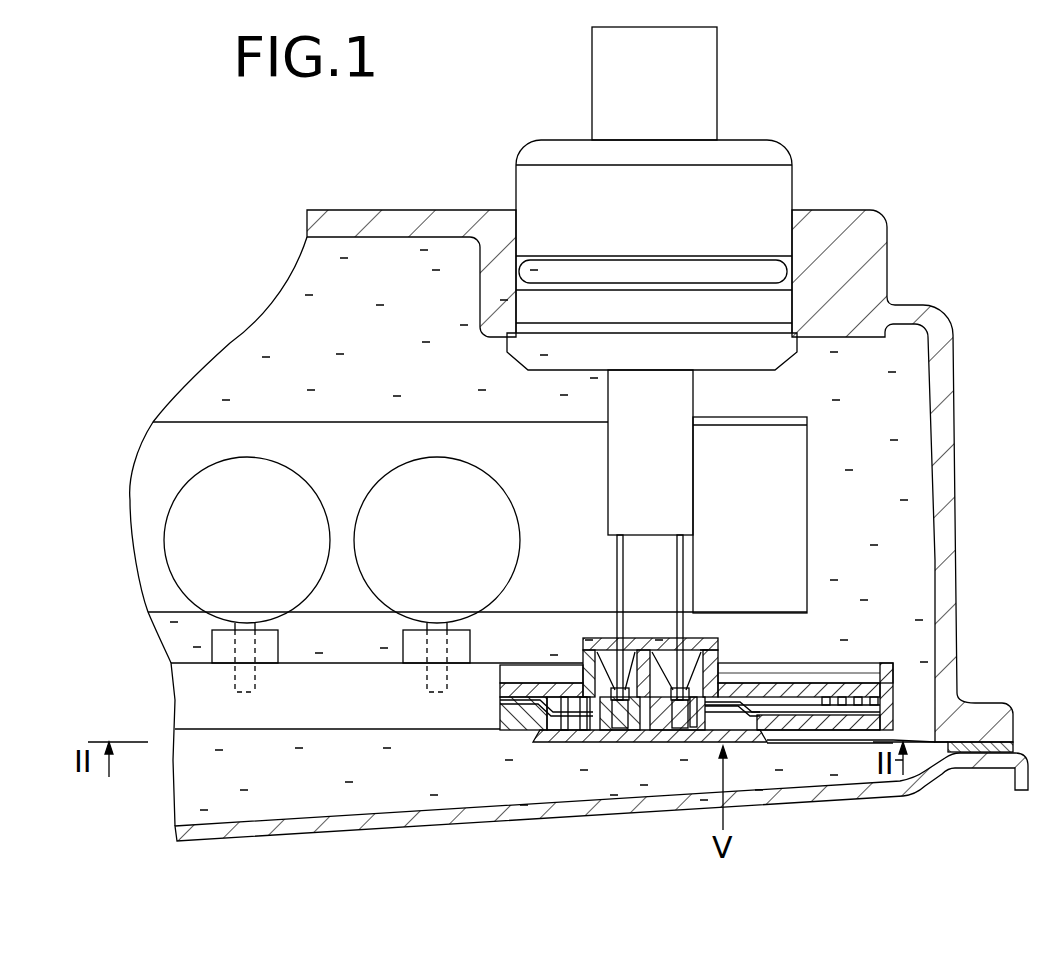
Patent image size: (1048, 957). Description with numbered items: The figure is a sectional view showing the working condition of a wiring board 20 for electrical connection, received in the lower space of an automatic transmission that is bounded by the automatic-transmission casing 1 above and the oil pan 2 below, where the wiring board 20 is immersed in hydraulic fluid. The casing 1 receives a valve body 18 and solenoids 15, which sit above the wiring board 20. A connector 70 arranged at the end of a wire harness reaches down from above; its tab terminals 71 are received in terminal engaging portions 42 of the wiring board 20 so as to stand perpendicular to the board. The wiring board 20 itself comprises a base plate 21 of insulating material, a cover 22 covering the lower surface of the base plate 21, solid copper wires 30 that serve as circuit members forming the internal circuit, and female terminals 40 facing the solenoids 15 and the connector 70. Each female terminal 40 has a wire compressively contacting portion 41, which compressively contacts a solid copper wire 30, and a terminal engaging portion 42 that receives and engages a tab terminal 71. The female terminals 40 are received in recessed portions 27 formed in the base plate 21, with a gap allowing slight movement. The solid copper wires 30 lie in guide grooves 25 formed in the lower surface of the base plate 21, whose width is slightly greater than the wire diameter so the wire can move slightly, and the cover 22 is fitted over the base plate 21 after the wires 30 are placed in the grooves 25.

The automatic-transmission casing 1 is at (888, 260).
The oil pan 2 is at (455, 828).
The solenoids 15 is at (165, 545).
The valve body 18 is at (190, 422).
The wiring board 20 is at (888, 655).
The base plate 21 is at (832, 697).
The cover 22 is at (797, 743).
The guide groove 25 is at (843, 745).
The recessed portion 27 is at (588, 656).
The solid copper wire 30 is at (776, 697).
The female terminal 40 is at (597, 741).
The wire compressively contacting portion 41 is at (548, 743).
The terminal engaging portion 42 is at (673, 745).
The connector 70 is at (790, 148).
The tab terminals 71 is at (617, 578).